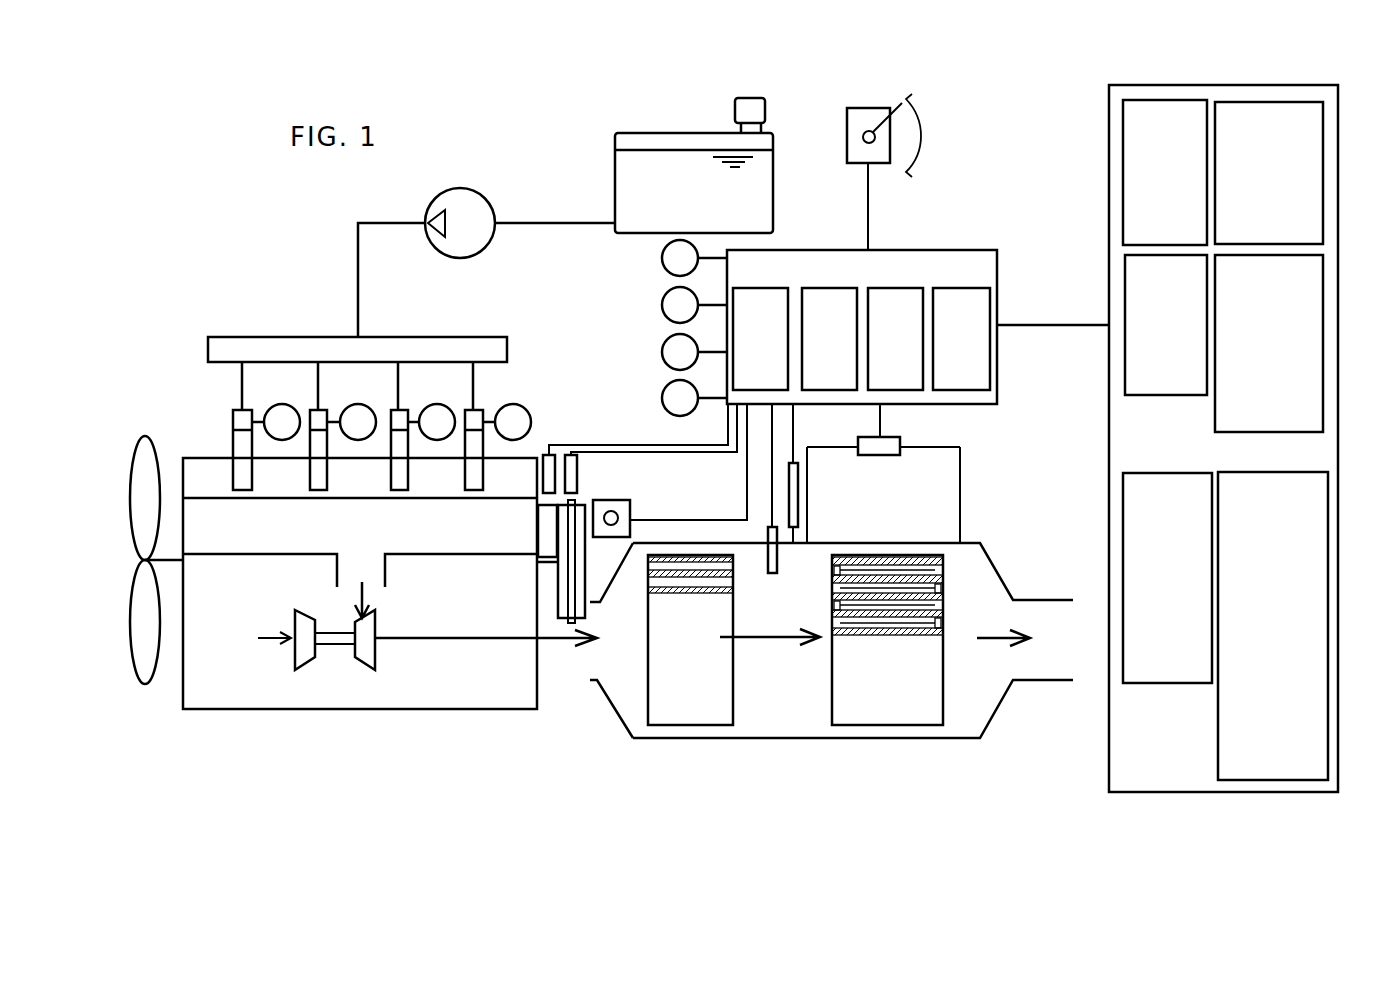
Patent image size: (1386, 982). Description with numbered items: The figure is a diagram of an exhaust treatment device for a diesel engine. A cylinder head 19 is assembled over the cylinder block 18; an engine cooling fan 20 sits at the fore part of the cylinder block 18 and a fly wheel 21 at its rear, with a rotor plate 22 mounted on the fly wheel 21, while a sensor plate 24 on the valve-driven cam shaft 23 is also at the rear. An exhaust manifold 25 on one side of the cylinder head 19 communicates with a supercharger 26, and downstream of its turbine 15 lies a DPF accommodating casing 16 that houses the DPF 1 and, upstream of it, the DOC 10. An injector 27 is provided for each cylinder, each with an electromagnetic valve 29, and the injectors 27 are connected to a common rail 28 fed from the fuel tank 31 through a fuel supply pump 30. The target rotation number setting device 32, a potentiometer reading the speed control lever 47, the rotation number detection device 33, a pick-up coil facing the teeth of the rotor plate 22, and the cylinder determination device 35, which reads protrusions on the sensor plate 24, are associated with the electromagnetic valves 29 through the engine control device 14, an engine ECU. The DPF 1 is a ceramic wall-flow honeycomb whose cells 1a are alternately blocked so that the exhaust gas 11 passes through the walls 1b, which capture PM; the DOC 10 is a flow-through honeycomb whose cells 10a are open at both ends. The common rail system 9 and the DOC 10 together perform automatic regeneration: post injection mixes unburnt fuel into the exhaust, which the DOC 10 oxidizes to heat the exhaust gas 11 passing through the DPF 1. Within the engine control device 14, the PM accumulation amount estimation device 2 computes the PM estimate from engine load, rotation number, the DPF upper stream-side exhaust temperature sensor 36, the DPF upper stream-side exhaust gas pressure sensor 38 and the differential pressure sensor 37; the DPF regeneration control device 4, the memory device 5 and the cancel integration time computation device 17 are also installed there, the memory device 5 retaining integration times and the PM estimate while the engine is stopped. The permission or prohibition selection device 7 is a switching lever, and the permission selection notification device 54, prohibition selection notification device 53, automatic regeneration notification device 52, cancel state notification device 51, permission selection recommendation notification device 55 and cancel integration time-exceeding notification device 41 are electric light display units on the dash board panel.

The DPF 1 is at (887, 680).
The cells 1a is at (905, 620).
The walls 1b is at (867, 613).
The PM accumulation amount estimation device 2 is at (772, 298).
The DPF regeneration control device 4 is at (812, 297).
The memory device 5 is at (912, 293).
The automatic DPF regeneration processing permission or prohibition selection device 7 is at (853, 148).
The common rail system 9 is at (386, 541).
The DOC 10 is at (698, 677).
The cell 10a is at (693, 580).
The exhaust gas 11 is at (480, 643).
The engine control device 14 is at (885, 301).
The turbine 15 is at (371, 644).
The DPF accommodating casing 16 is at (802, 740).
The cancel integration time computation device 17 is at (978, 290).
The cylinder block 18 is at (500, 709).
The cylinder head 19 is at (534, 455).
The engine cooling fan 20 is at (143, 460).
The fly wheel 21 is at (587, 605).
The rotor plate 22 is at (575, 517).
The valve-driven cam shaft 23 is at (538, 530).
The sensor plate 24 is at (560, 540).
The exhaust manifold 25 is at (232, 545).
The supercharger 26 is at (347, 662).
The injector 27 is at (313, 475).
The common rail 28 is at (283, 347).
The electromagnetic valve 29 is at (470, 420).
The fuel supply pump 30 is at (476, 202).
The fuel tank 31 is at (763, 142).
The target rotation number setting device 32 is at (606, 531).
The rotation number detection device 33 is at (573, 455).
The cylinder determination device 35 is at (558, 455).
The DPF upper stream-side exhaust temperature sensor 36 is at (770, 575).
The differential pressure sensor 37 is at (883, 455).
The DPF upper stream-side exhaust gas pressure sensor 38 is at (798, 493).
The cancel integration time-exceeding notification device 41 is at (1317, 612).
The speed control lever 47 is at (614, 510).
The cancel state notification device 51 is at (1310, 307).
The automatic regeneration notification device 52 is at (1315, 110).
The automatic DPF regeneration processing prohibition selection notification device 53 is at (1123, 300).
The automatic DPF regeneration processing permission selection notification device 54 is at (1128, 178).
The automatic DPF regeneration processing permission selection recommendation notifi 55 is at (1128, 528).